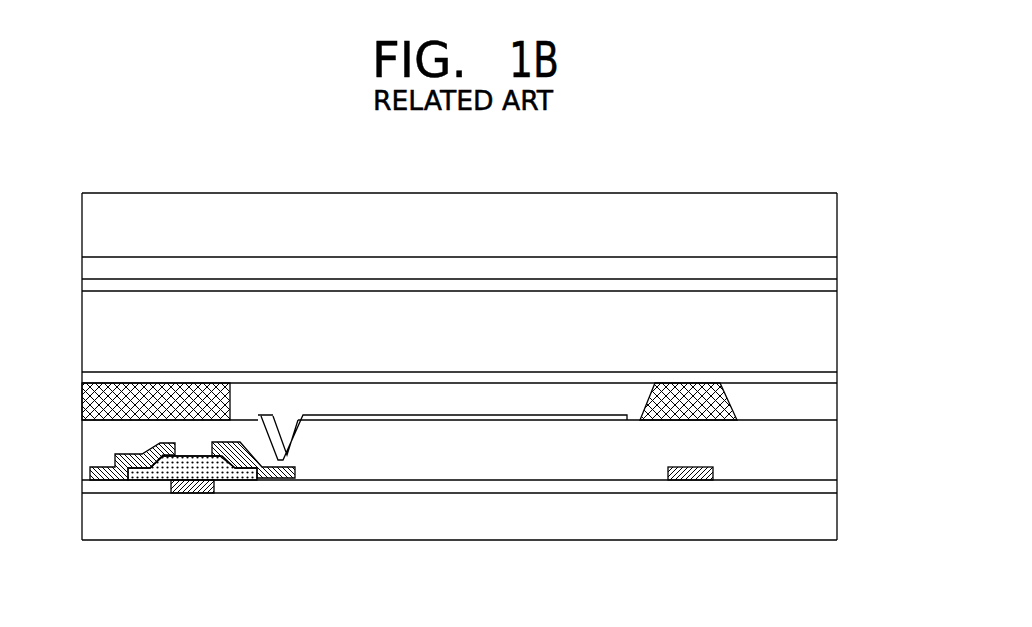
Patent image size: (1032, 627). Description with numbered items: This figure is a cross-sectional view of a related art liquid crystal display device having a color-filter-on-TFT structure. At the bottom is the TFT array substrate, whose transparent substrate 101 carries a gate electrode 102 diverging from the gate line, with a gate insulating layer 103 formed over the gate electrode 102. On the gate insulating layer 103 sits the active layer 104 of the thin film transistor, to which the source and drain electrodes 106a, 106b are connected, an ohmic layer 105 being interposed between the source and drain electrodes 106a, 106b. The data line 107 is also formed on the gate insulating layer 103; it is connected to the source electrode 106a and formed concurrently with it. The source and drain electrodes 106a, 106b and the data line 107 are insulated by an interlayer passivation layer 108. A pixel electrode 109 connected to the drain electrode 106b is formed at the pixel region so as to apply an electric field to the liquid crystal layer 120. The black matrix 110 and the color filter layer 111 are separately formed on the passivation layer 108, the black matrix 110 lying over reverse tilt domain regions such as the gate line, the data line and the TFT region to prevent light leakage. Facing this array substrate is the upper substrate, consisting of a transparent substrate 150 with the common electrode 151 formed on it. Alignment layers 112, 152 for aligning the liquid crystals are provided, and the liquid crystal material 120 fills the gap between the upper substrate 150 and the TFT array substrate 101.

The transparent substrate 101 is at (810, 513).
The gate electrode 102 is at (193, 493).
The gate insulating layer 103 is at (557, 487).
The active layer 104 is at (150, 480).
The ohmic layer 105 is at (248, 480).
The source electrode 106a is at (102, 480).
The drain electrode 106b is at (292, 480).
The data line 107 is at (695, 480).
The interlayer passivation layer 108 is at (810, 448).
The pixel electrode 109 is at (445, 420).
The black matrix 110 is at (82, 401).
The color filter layer 111 is at (810, 405).
The alignment layer 112 is at (810, 378).
The liquid crystal layer 120 is at (810, 330).
The transparent substrate 150 is at (810, 232).
The common electrode 151 is at (810, 265).
The alignment layer 152 is at (810, 285).